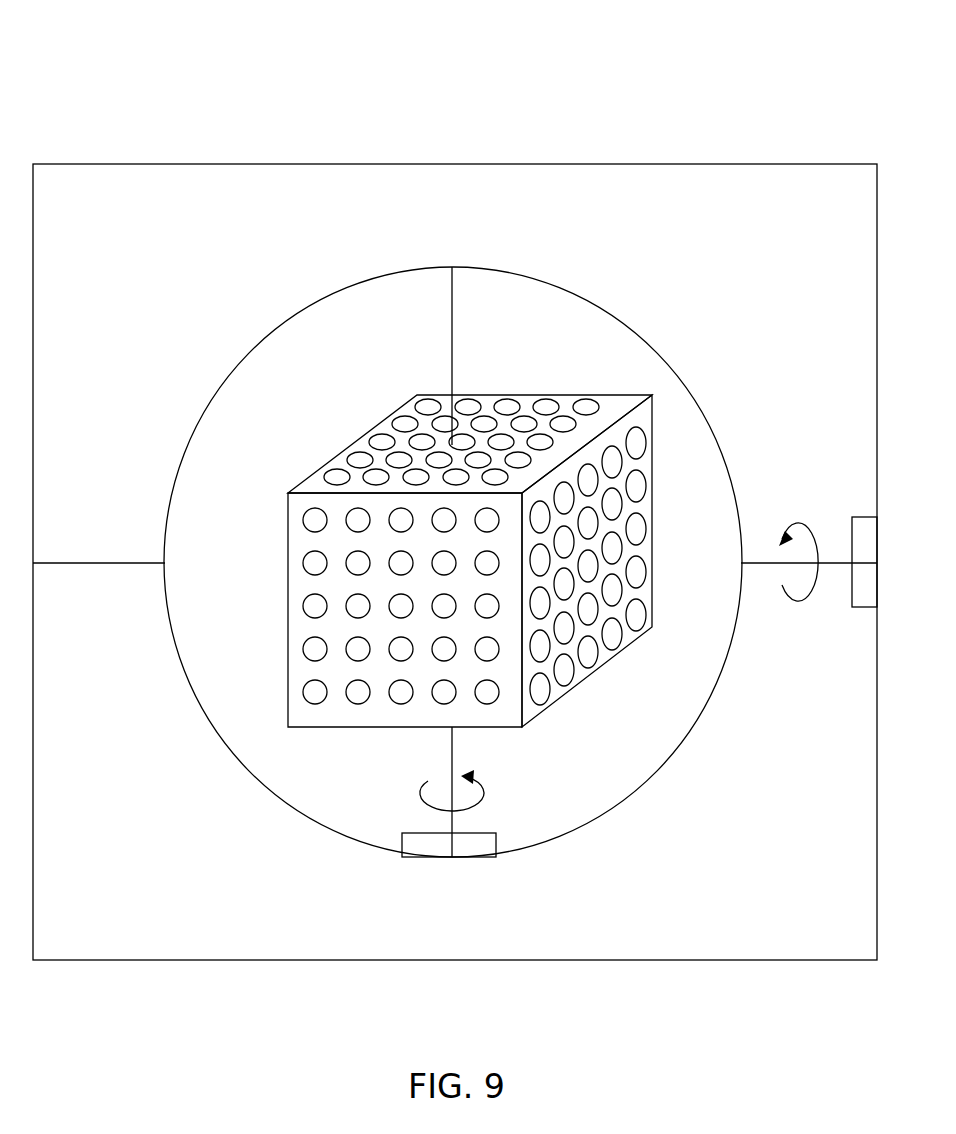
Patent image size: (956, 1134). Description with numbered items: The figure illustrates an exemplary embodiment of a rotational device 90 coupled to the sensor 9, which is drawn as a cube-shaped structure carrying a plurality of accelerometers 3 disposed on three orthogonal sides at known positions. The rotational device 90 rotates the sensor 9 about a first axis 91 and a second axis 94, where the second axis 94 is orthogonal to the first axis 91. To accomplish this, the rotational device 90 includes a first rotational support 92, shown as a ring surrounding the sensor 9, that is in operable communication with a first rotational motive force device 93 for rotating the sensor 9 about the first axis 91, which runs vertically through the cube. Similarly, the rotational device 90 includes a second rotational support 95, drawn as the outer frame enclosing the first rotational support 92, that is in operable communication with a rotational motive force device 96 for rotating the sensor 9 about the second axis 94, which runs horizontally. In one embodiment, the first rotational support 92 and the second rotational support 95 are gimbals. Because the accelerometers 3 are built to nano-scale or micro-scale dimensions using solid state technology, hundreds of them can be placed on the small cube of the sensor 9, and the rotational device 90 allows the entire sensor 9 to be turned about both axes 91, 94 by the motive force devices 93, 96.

The rotational device 90 is at (112, 70).
The second rotational support 95 is at (33, 675).
The second axis 94 is at (100, 562).
The first rotational support 92 is at (630, 328).
The first axis 91 is at (453, 355).
The first rotational motive force device 93 is at (496, 837).
The rotational motive force device 96 is at (859, 515).
The sensor 9 is at (328, 415).
The accelerometers 3 is at (427, 405).